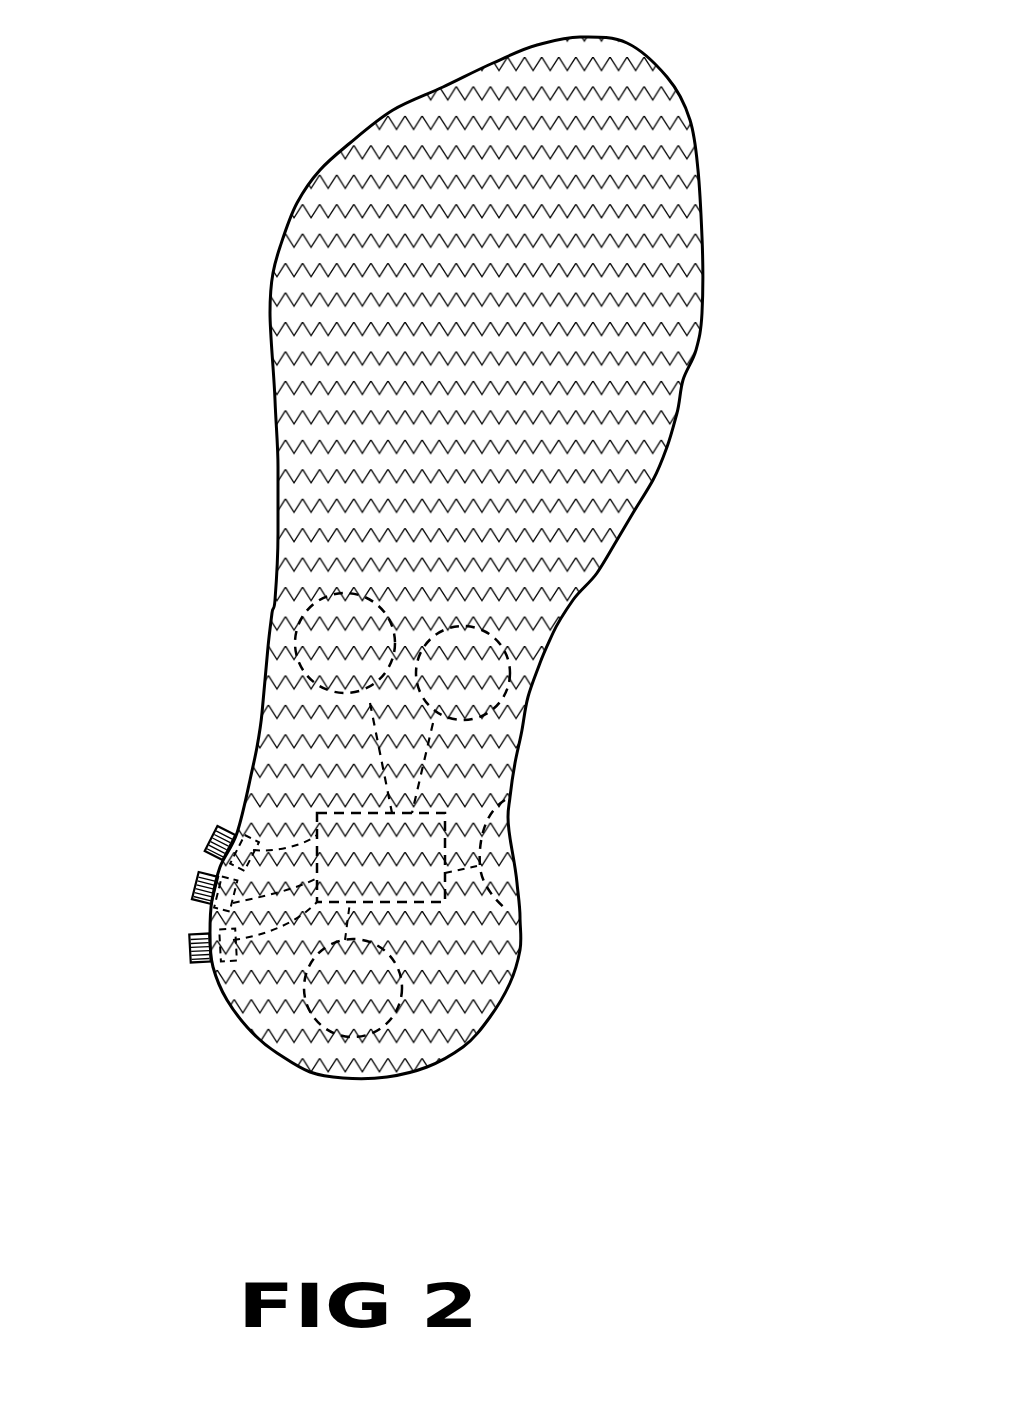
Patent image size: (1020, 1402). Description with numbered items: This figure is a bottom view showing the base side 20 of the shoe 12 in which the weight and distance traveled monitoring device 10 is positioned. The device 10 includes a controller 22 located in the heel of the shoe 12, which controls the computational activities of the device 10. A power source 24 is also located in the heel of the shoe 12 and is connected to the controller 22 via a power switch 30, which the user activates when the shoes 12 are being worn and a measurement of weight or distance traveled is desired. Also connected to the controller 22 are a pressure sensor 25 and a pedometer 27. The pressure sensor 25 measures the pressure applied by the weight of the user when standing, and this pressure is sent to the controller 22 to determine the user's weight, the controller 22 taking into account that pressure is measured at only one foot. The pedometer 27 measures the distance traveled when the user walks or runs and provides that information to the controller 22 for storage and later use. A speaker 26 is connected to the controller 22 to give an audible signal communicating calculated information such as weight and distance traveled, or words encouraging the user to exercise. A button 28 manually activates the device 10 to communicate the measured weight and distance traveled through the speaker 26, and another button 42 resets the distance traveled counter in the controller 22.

The weight and distance traveled monitoring device 10 is at (600, 75).
The shoe 12 is at (712, 128).
The base side 20 is at (563, 577).
The controller 22 is at (447, 905).
The power source 24 is at (395, 1040).
The pressure sensor 25 is at (300, 617).
The speaker 26 is at (505, 870).
The pedometer 27 is at (515, 685).
The button 28 is at (194, 886).
The power switch 30 is at (189, 948).
The button 42 is at (208, 832).